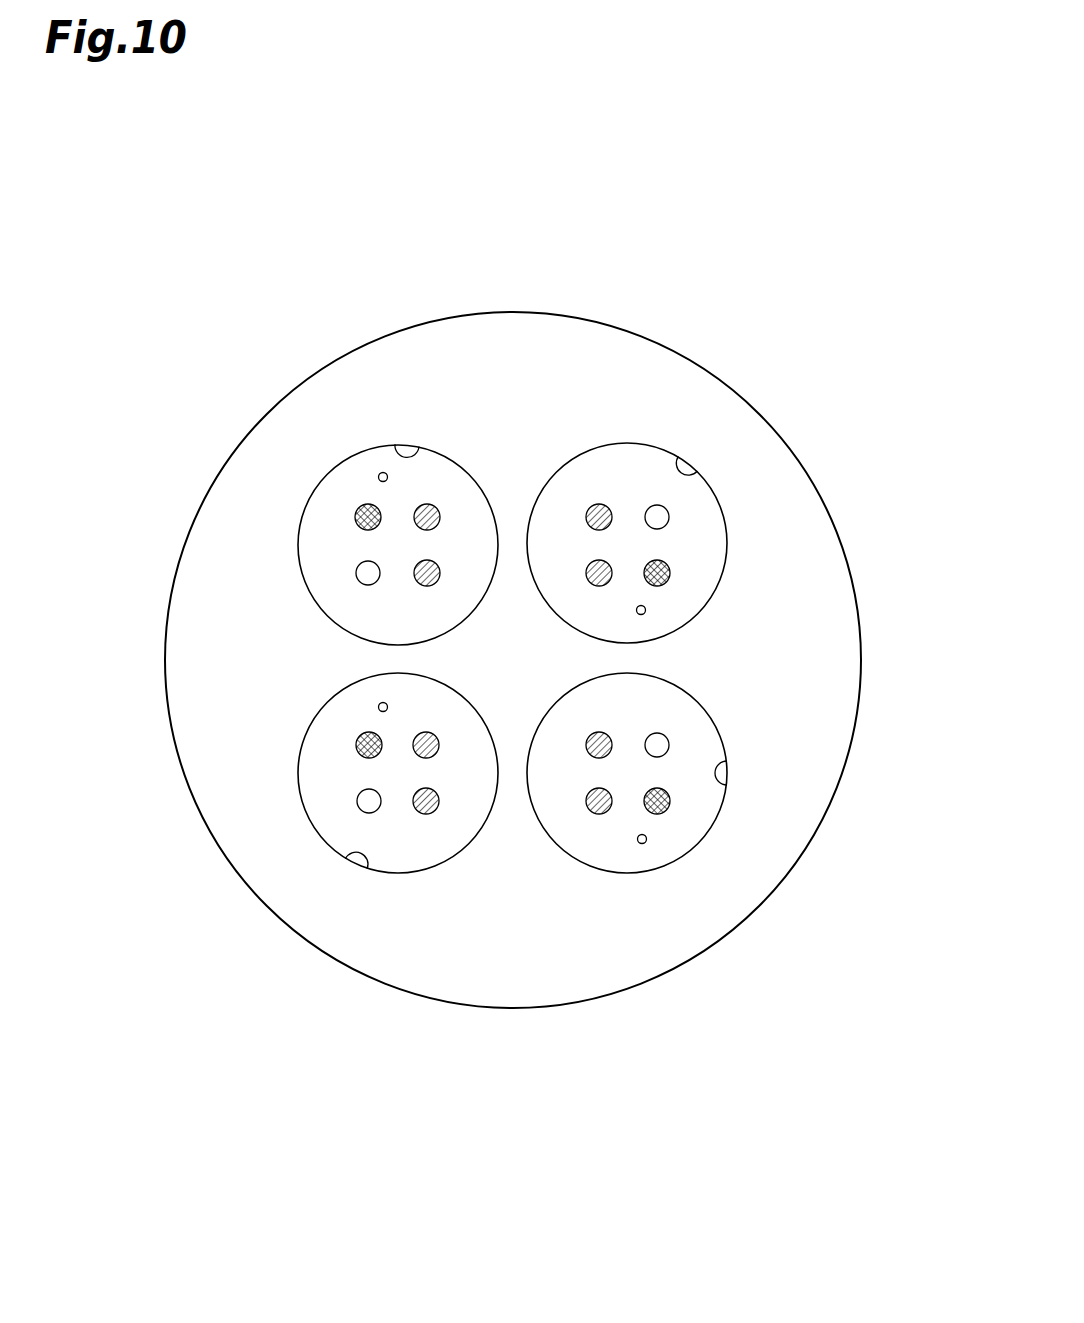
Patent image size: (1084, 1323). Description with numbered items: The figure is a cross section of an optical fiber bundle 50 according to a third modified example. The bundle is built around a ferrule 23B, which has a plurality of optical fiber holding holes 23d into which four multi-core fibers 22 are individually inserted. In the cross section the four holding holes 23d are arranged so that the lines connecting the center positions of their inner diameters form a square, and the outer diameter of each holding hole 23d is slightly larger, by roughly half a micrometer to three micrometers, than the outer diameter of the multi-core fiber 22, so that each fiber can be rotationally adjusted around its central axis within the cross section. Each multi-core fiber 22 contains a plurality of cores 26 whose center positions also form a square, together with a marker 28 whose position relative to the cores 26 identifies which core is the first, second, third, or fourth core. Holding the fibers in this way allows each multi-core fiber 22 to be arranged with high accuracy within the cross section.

The optical fiber bundle 50 is at (808, 323).
The ferrule 23B is at (540, 332).
The multi-core fiber 22 is at (735, 1010).
The optical fiber holding hole 23d is at (413, 455).
The marker 28 is at (381, 470).
The core 26 is at (444, 1105).